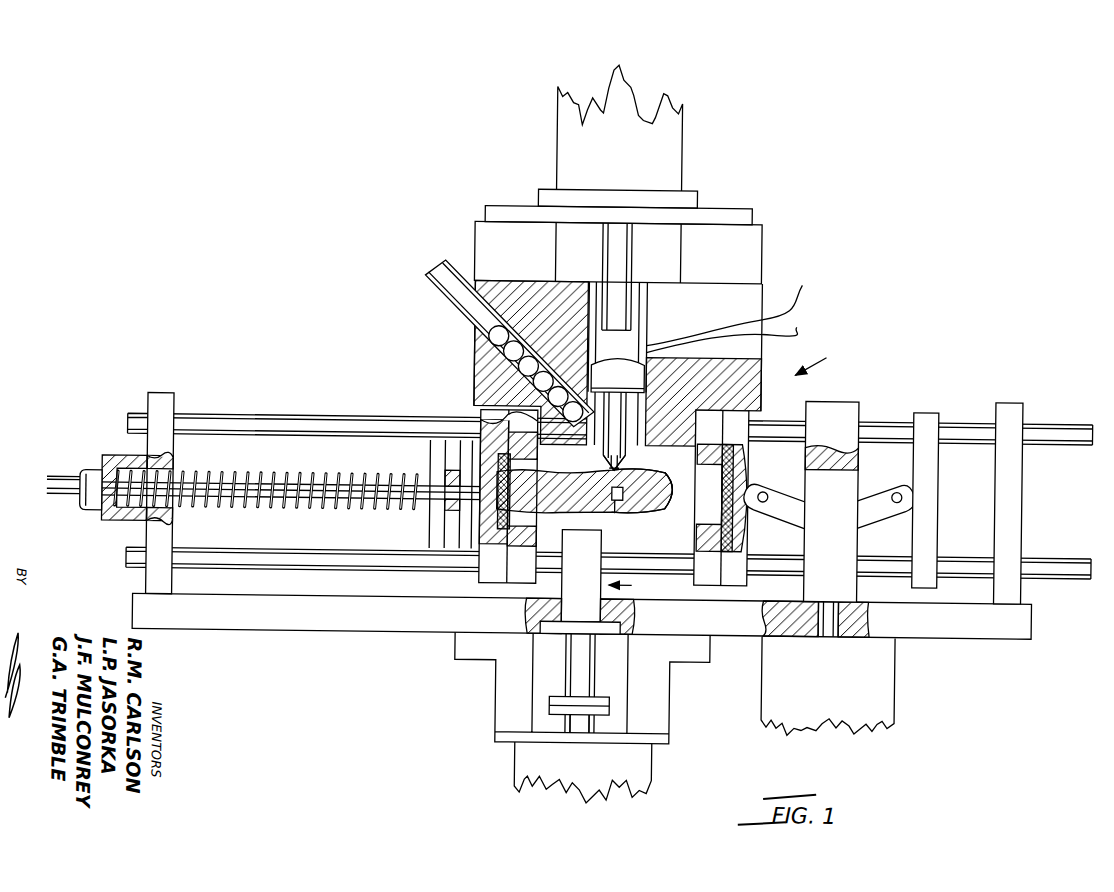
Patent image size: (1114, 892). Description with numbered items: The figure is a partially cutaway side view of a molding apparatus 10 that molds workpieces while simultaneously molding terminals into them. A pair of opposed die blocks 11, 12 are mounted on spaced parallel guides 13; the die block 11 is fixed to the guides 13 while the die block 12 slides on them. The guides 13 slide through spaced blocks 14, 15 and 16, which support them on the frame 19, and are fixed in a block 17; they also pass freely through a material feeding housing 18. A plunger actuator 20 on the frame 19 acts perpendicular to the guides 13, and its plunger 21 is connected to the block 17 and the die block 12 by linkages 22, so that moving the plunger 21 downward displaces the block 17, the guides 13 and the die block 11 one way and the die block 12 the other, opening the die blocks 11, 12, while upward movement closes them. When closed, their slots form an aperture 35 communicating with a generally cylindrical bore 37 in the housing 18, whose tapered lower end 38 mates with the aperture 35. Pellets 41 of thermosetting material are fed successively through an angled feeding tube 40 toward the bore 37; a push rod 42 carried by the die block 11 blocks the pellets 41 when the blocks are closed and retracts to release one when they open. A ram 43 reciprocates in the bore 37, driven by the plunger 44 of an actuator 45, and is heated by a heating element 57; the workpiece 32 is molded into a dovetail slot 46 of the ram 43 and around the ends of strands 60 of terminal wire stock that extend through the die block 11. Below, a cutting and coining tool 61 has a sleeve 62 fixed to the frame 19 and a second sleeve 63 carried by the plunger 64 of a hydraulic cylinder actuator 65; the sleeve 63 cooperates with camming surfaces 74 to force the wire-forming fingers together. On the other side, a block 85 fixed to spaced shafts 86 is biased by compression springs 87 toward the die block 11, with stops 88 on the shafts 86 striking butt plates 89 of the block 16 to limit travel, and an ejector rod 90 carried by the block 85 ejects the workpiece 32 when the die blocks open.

The molding apparatus 10 is at (822, 356).
The die block 11 is at (566, 515).
The die block 12 is at (679, 512).
The guides 13 is at (1058, 424).
The block 14 is at (1004, 398).
The block 15 is at (830, 399).
The block 16 is at (158, 398).
The block 17 is at (922, 409).
The material feeding housing 18 is at (473, 365).
The frame 19 is at (1027, 625).
The plunger actuator 20 is at (897, 676).
The plunger 21 is at (840, 596).
The linkages 22 is at (792, 488).
The workpiece 32 is at (617, 513).
The aperture 35 is at (606, 466).
The bore 37 is at (622, 446).
The lower end of bore 38 is at (620, 462).
The feeding tube 40 is at (443, 302).
The pellets 41 is at (523, 345).
The push rod 42 is at (532, 413).
The ram 43 is at (627, 420).
The plunger 44 is at (629, 262).
The actuator 45 is at (677, 148).
The dovetail slot 46 is at (666, 470).
The heating element 57 is at (643, 337).
The strands of terminal wire stock 60 is at (68, 483).
The cutting and coining tool 61 is at (634, 589).
The sleeve 62 is at (563, 590).
The second sleeve 63 is at (590, 676).
The plunger 64 is at (597, 724).
The hydraulic cylinder actuator 65 is at (653, 770).
The camming surfaces 74 is at (612, 704).
The block 85 is at (430, 524).
The shafts 86 is at (248, 478).
The compression springs 87 is at (304, 478).
The stops 88 is at (90, 516).
The butt plates 89 is at (125, 462).
The ejector rod 90 is at (450, 474).